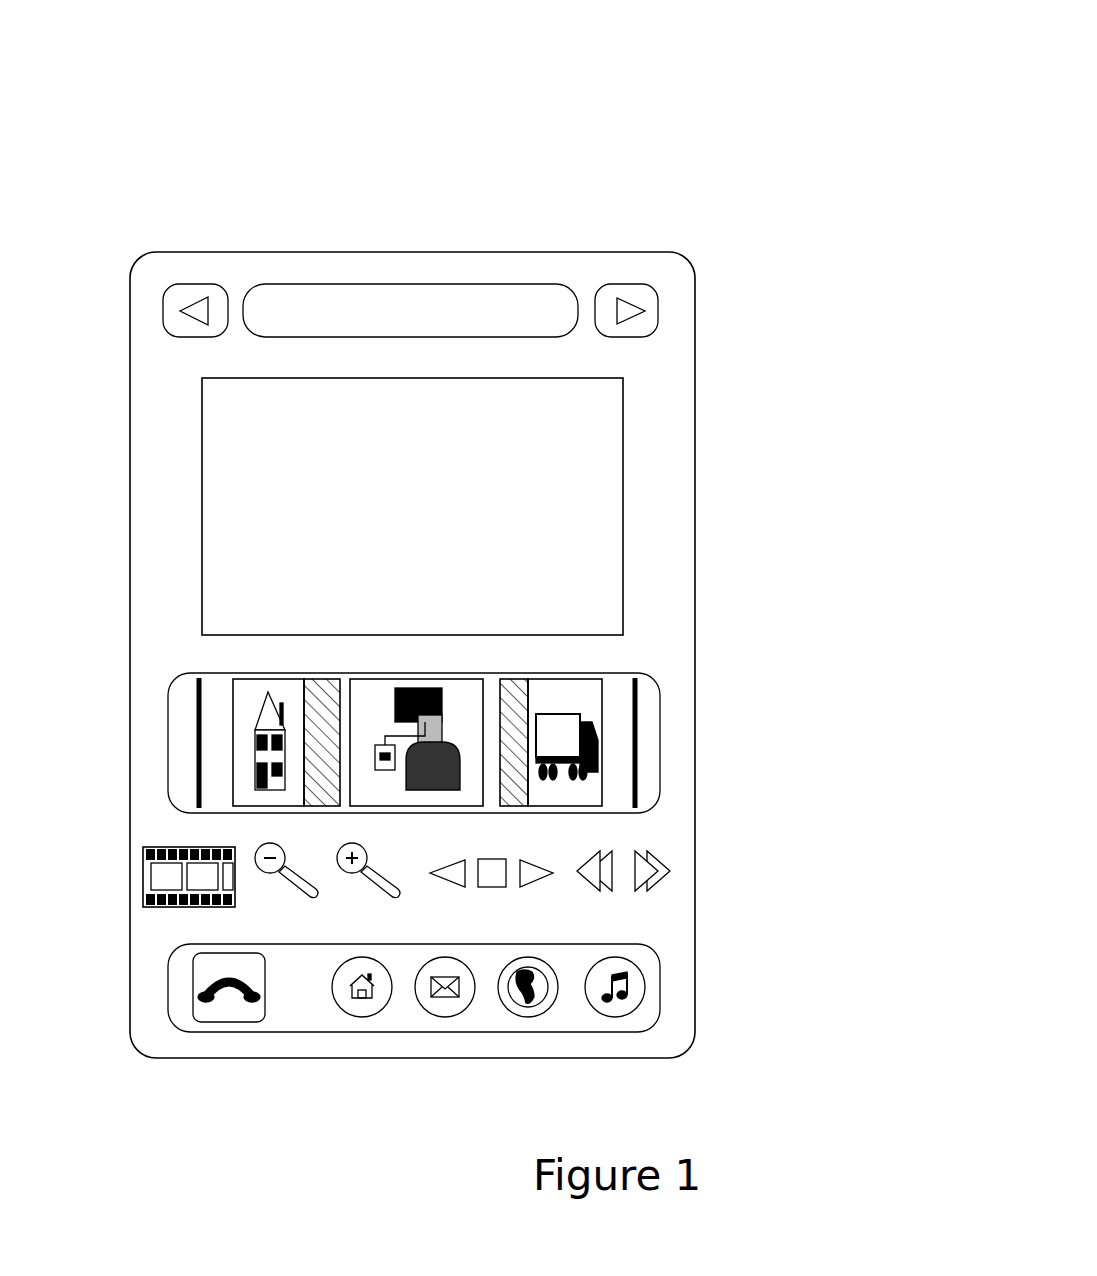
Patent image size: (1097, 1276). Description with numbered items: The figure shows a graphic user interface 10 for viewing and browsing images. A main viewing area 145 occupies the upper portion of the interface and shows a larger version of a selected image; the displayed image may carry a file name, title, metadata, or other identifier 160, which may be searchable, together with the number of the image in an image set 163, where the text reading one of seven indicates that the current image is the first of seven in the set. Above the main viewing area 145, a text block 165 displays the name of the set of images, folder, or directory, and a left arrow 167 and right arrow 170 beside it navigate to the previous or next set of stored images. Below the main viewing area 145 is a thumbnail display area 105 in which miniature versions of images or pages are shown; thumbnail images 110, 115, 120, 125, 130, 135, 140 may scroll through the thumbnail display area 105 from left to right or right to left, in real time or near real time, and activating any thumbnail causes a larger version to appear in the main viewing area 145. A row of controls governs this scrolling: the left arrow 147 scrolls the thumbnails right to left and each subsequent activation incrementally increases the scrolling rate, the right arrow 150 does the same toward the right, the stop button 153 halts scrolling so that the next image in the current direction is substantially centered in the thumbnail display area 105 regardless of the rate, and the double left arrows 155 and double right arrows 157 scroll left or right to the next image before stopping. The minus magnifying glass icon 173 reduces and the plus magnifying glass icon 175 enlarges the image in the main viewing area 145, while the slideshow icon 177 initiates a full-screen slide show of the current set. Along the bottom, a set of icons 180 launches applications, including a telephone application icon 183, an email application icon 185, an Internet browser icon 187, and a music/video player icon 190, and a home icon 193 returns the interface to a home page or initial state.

The graphic user interface 10 is at (688, 66).
The thumbnail display area 105 is at (660, 718).
The thumbnail image 110 is at (246, 690).
The thumbnail image 115 is at (373, 690).
The thumbnail image 120 is at (570, 690).
The thumbnail image 125 is at (202, 675).
The thumbnail image 130 is at (642, 672).
The thumbnail image 135 is at (312, 690).
The thumbnail image 140 is at (505, 688).
The main viewing area 145 is at (597, 457).
The left arrow 147 is at (439, 860).
The right arrow 150 is at (537, 860).
The stop button 153 is at (493, 858).
The double left arrows 155 is at (588, 860).
The double right arrows 157 is at (650, 858).
The identifier 160 is at (370, 432).
The number of image in an image set 163 is at (420, 590).
The text block 165 is at (468, 298).
The left arrow 167 is at (183, 297).
The right arrow 170 is at (640, 294).
The "−" magnifying glass icon 173 is at (300, 863).
The "+" magnifying glass icon 175 is at (382, 862).
The slideshow icon 177 is at (142, 867).
The set of icons 180 is at (662, 964).
The telephone application icon 183 is at (232, 1007).
The email application icon 185 is at (458, 1005).
The Internet browser icon 187 is at (548, 1005).
The music/video player icon 190 is at (608, 1003).
The home icon 193 is at (372, 1006).